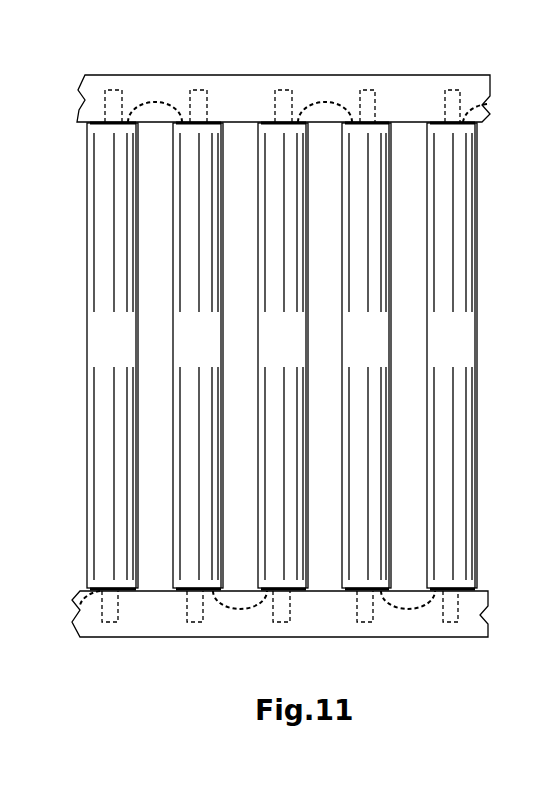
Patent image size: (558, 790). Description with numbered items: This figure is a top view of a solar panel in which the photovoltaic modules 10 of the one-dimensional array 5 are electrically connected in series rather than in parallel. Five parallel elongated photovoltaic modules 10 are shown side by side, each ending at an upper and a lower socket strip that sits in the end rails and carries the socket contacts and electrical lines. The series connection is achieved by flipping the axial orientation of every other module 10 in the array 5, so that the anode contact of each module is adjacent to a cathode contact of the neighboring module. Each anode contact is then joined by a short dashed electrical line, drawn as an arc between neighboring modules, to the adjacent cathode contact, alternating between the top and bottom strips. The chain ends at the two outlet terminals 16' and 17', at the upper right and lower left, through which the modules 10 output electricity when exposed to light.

The one-dimensional array 5 is at (66, 313).
The photovoltaic module 10 is at (463, 349).
The outlet terminal 16' is at (507, 99).
The outlet terminal 17' is at (56, 584).